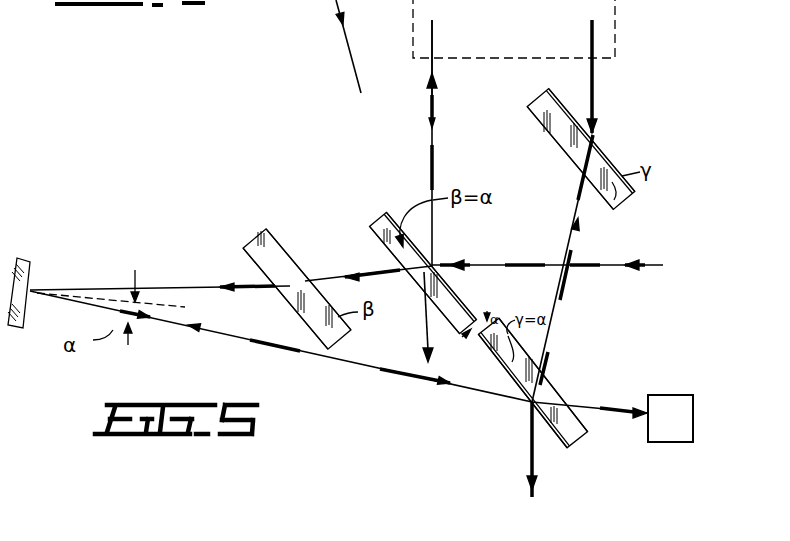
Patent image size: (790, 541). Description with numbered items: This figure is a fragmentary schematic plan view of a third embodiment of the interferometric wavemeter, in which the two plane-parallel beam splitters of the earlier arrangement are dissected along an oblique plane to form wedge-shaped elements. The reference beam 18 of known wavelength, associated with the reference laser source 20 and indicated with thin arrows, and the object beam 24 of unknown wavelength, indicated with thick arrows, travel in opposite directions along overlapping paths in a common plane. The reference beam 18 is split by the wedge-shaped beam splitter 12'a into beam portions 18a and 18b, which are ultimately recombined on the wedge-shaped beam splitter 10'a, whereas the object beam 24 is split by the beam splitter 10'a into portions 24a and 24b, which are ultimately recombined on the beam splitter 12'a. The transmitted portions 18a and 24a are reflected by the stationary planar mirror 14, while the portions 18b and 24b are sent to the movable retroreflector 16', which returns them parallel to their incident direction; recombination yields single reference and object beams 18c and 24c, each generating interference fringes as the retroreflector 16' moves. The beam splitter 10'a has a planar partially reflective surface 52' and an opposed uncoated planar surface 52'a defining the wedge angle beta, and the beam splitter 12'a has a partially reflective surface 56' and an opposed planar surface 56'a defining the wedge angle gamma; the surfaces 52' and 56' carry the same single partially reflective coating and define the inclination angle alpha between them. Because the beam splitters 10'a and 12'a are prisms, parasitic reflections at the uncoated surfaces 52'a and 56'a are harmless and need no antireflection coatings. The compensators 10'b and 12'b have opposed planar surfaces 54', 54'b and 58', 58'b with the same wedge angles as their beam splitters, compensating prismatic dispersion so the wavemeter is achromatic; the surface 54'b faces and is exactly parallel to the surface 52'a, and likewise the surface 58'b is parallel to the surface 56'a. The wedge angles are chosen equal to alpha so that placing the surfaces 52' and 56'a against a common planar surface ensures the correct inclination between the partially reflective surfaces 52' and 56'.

The wedge-shaped beam splitter 10'a is at (411, 252).
The compensator 10'b is at (282, 266).
The wedge-shaped beam splitter 12'a is at (547, 404).
The compensator 12'b is at (551, 139).
The stationary planar mirror 14 is at (40, 266).
The retroreflector 16' is at (544, 29).
The reference laser beam 18 is at (630, 410).
The reference beam portion 18a is at (169, 288).
The reference beam portion 18b is at (434, 133).
The recombined reference beam 18c is at (337, 10).
The reference laser source 20 is at (672, 394).
The object beam 24 is at (642, 262).
The object beam portion 24a is at (372, 276).
The object beam portion 24b is at (430, 98).
The recombined object beam 24c is at (528, 433).
The partially reflective surface 52' is at (448, 265).
The opposed planar surface 52'a is at (427, 298).
The planar surface of compensator 54' is at (282, 298).
The planar surface of compensator 54'b is at (308, 256).
The partially reflective surface 56' is at (508, 389).
The opposed planar surface 56'a is at (555, 374).
The planar surface of compensator 58' is at (600, 140).
The planar surface of compensator 58'b is at (553, 158).